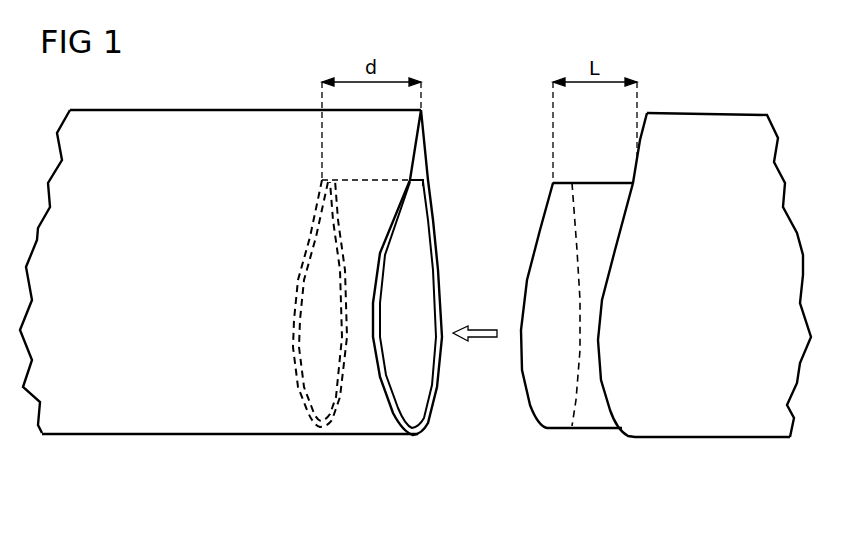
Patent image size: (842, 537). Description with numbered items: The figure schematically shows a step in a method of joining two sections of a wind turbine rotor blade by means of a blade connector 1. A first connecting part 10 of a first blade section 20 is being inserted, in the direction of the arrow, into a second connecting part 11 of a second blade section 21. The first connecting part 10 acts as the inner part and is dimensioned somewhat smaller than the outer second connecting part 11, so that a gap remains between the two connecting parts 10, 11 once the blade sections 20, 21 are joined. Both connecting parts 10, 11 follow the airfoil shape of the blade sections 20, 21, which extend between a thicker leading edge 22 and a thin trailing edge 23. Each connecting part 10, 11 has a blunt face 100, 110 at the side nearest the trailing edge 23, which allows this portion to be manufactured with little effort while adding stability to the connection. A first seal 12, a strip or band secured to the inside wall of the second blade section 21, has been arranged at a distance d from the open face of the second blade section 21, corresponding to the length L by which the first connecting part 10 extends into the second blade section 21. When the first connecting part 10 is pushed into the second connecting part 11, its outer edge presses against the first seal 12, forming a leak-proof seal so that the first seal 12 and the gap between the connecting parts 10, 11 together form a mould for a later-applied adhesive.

The blade connector 1 is at (491, 454).
The first connecting part 10 is at (588, 419).
The blunt face 100 is at (600, 182).
The second connecting part 11 is at (422, 311).
The blunt face 110 is at (416, 184).
The first seal 12 is at (296, 380).
The first blade section 20 is at (716, 125).
The second blade section 21 is at (255, 118).
The leading edge 22 is at (172, 435).
The trailing edge 23 is at (173, 110).